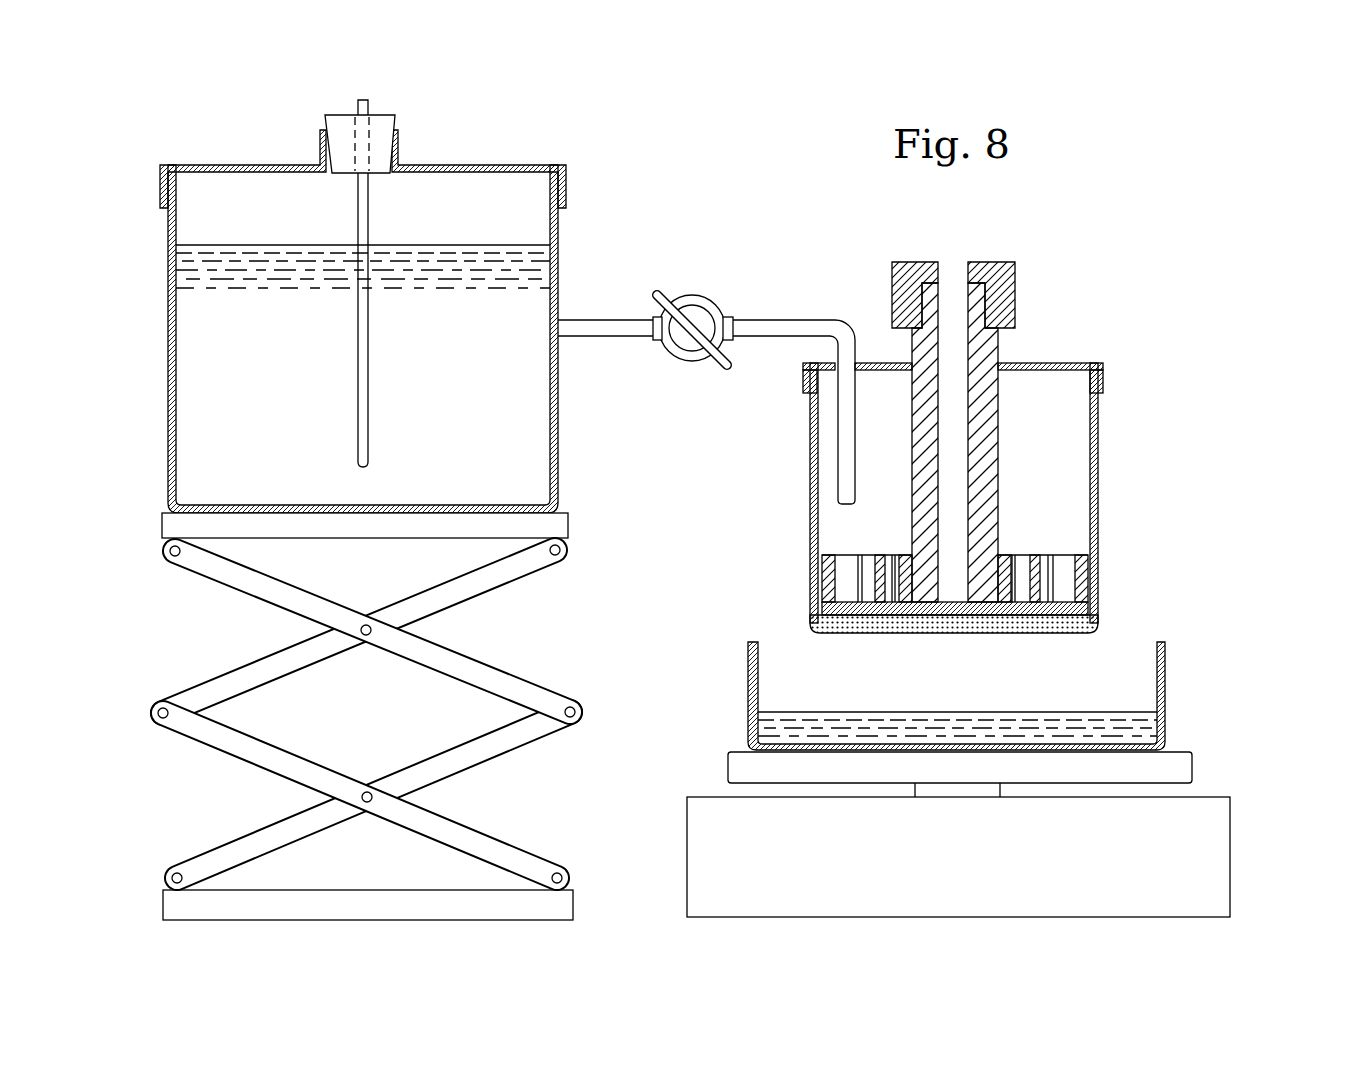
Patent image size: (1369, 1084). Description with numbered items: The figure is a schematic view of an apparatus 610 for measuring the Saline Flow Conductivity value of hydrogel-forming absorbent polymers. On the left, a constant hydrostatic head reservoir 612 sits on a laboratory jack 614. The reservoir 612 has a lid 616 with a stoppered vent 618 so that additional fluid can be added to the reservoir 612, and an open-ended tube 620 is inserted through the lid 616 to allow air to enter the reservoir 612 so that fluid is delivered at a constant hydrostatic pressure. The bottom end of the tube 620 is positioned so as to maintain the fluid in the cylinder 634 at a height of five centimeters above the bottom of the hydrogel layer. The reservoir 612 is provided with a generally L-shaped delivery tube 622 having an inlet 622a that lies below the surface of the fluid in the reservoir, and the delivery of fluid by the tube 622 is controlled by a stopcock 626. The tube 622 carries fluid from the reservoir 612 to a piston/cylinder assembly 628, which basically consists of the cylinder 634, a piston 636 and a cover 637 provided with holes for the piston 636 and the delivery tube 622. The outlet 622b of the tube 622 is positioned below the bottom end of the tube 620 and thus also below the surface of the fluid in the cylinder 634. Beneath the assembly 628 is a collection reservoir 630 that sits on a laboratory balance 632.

The apparatus 610 is at (735, 157).
The constant hydrostatic head reservoir 612 is at (168, 344).
The laboratory jack 614 is at (193, 693).
The lid 616 is at (468, 165).
The stoppered vent 618 is at (310, 128).
The open-ended tube 620 is at (365, 202).
The delivery tube 622 is at (706, 407).
The inlet 622a is at (565, 335).
The outlet 622b is at (846, 504).
The stopcock 626 is at (700, 296).
The piston/cylinder assembly 628 is at (984, 438).
The collection reservoir 630 is at (1172, 680).
The laboratory balance 632 is at (1248, 822).
The cylinder 634 is at (1098, 465).
The piston 636 is at (1045, 402).
The cover 637 is at (803, 380).